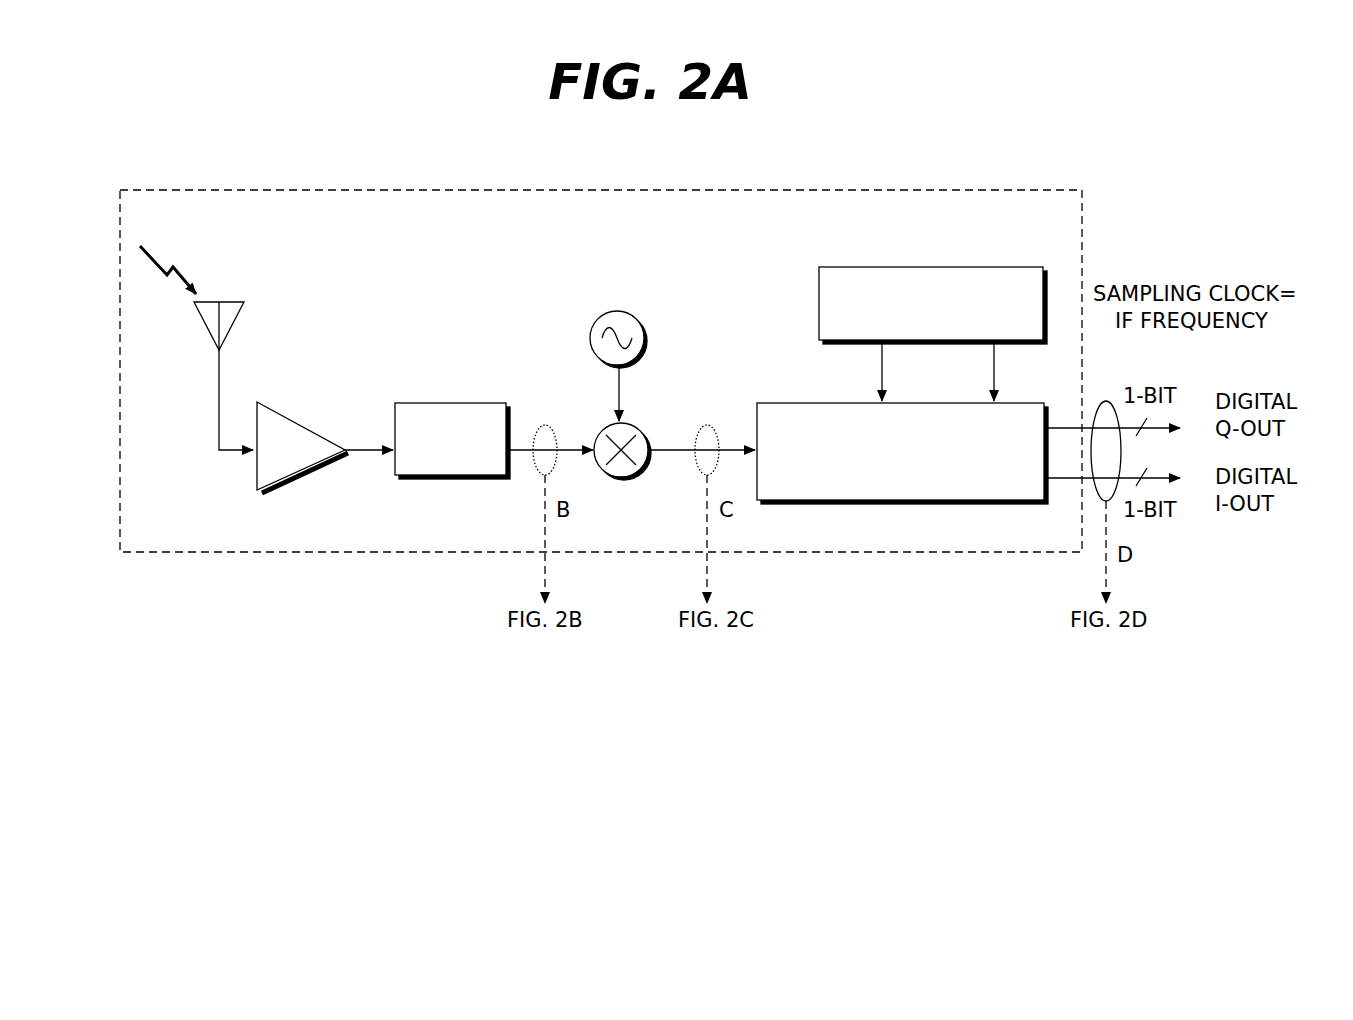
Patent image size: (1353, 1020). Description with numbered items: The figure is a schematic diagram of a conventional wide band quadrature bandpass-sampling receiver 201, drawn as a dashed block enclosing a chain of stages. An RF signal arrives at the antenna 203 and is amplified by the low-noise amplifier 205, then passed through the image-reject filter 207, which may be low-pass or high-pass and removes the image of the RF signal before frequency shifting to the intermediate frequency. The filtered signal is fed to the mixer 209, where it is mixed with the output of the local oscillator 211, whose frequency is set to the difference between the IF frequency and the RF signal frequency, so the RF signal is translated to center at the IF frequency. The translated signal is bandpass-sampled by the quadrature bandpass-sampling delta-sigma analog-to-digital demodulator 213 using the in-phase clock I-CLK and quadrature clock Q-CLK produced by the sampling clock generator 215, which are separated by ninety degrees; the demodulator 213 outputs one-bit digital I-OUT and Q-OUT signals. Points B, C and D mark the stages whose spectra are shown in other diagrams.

The quadrature bandpass-sampling receiver 201 is at (204, 190).
The antenna 203 is at (212, 298).
The low-noise amplifier 205 is at (282, 410).
The image-reject filter 207 is at (442, 403).
The mixer 209 is at (640, 425).
The local oscillator 211 is at (645, 338).
The quadrature bandpass-sampling delta-sigma analog-to-digital demodulator 213 is at (788, 400).
The sampling clock generator 215 is at (814, 308).